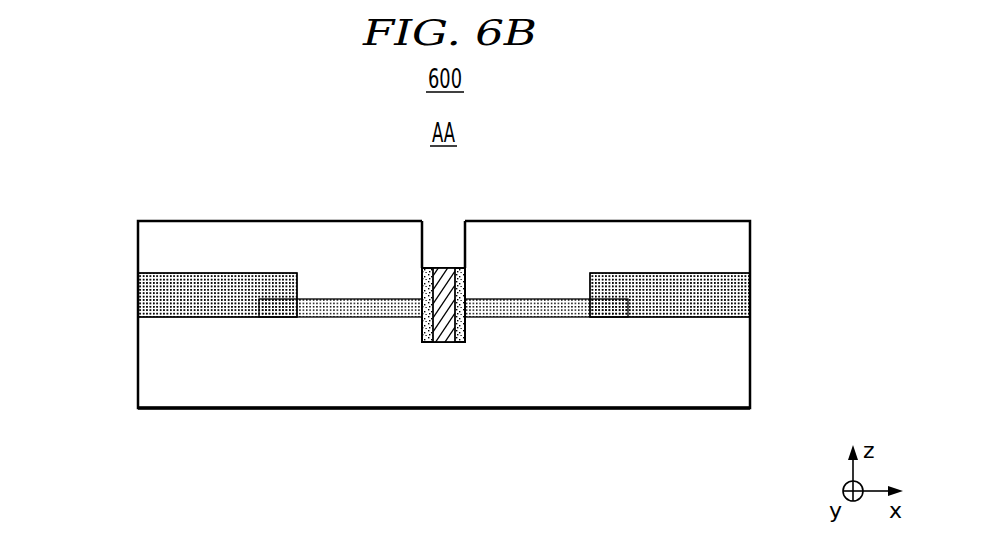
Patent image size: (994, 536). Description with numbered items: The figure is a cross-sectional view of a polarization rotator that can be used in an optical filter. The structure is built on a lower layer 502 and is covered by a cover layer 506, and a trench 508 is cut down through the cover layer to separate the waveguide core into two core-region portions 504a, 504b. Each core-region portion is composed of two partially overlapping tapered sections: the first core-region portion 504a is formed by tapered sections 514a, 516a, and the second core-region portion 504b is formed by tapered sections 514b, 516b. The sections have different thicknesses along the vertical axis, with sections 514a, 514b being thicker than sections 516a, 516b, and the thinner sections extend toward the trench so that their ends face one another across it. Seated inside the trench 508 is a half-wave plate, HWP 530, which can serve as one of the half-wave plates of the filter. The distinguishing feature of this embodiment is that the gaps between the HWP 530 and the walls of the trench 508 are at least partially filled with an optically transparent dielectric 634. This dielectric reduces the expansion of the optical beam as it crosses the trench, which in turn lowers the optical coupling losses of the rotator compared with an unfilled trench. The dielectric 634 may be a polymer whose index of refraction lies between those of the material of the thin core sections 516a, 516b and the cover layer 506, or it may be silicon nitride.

The substrate 502 is at (733, 389).
The cover layer 506 is at (733, 249).
The trench 508 is at (447, 219).
The core-region portion 504a is at (120, 296).
The core-region portion 504b is at (772, 297).
The tapered section 514a is at (192, 308).
The tapered section 514b is at (692, 308).
The tapered section 516a is at (342, 308).
The tapered section 516b is at (542, 308).
The HWP 530 is at (437, 345).
The optically transparent dielectric 634 is at (462, 283).